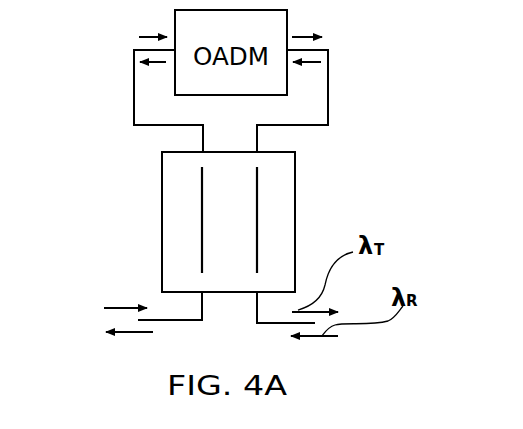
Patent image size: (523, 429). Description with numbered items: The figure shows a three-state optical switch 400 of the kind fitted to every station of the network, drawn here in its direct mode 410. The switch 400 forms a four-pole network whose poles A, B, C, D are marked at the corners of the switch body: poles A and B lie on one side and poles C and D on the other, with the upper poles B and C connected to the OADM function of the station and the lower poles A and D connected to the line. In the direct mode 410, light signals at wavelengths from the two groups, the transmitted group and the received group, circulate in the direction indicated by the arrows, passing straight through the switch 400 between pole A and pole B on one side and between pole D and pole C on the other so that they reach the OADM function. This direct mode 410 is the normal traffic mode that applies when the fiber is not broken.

The three-state optical switch 400 is at (176, 219).
The direct mode 410 is at (104, 308).
The pole A of the four-pole network A is at (185, 253).
The pole B of the four-pole network B is at (185, 192).
The pole C of the four-pole network C is at (270, 192).
The pole D of the four-pole network D is at (269, 253).